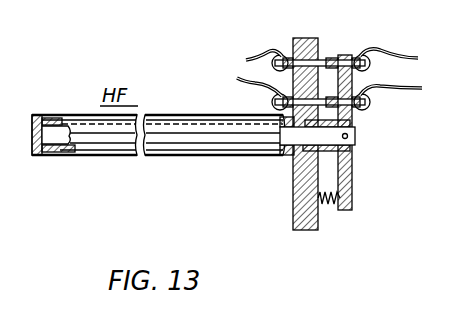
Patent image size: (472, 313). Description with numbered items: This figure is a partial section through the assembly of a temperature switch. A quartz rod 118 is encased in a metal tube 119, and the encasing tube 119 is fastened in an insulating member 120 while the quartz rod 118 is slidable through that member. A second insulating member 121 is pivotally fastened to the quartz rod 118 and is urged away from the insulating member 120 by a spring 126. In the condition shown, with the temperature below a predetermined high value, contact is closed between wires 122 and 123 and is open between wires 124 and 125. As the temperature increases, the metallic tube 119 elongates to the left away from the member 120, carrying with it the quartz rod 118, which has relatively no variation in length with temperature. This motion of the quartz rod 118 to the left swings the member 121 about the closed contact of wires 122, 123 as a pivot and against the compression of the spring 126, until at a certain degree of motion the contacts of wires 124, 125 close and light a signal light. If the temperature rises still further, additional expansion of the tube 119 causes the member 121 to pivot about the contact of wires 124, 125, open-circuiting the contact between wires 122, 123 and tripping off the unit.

The quartz rod 118 is at (66, 153).
The encasing metal tube 119 is at (103, 152).
The insulating member 120 is at (293, 173).
The second insulating member 121 is at (352, 178).
The wire 122 is at (398, 54).
The wire 123 is at (258, 52).
The wire 124 is at (398, 94).
The wire 125 is at (259, 90).
The spring 126 is at (322, 203).